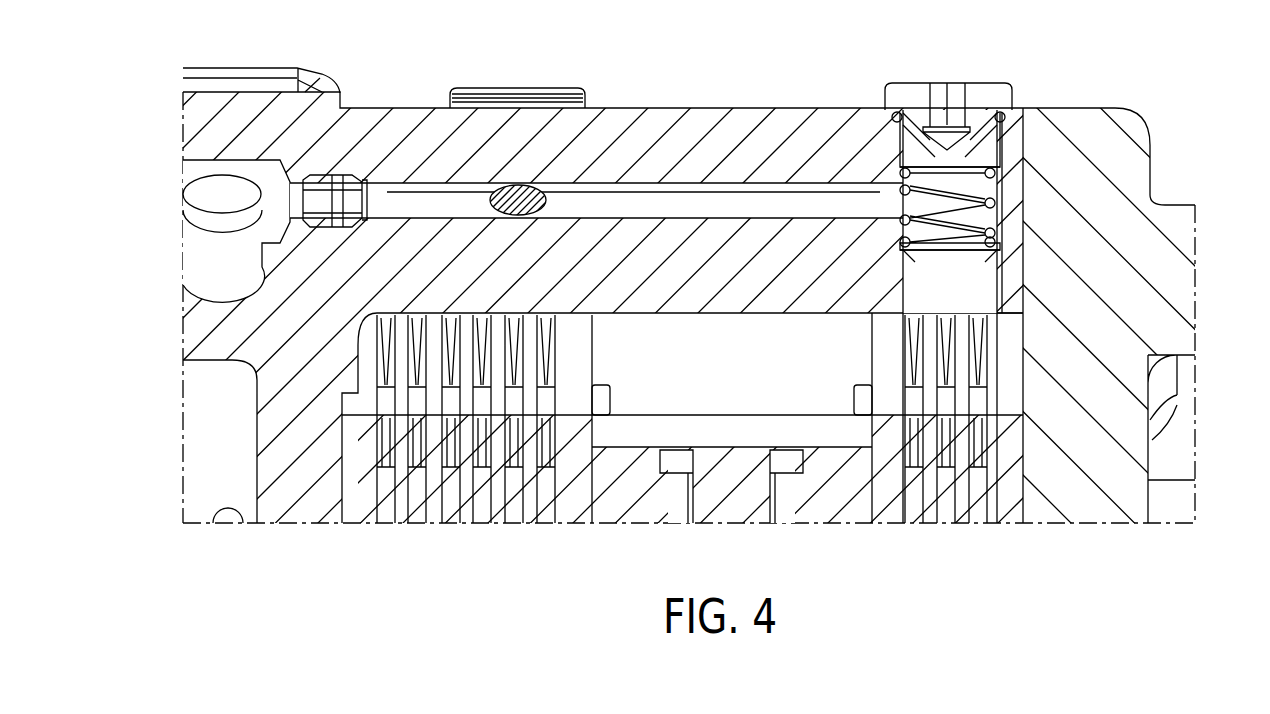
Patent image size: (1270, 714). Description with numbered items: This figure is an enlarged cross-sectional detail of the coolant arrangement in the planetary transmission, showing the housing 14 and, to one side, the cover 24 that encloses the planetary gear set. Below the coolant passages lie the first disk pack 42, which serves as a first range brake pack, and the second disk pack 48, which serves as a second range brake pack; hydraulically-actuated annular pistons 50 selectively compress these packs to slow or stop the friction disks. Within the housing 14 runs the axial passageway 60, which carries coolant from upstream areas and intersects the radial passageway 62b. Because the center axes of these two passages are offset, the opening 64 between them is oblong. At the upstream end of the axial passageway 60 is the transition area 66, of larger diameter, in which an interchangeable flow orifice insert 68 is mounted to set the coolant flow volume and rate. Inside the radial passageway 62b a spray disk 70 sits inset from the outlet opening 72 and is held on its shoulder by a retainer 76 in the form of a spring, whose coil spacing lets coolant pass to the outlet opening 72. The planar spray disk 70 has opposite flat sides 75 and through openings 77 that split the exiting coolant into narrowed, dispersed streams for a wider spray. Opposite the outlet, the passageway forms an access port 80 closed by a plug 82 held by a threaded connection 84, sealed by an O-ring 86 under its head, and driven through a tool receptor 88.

The housing 14 is at (747, 112).
The cover 24 is at (1182, 357).
The first disk pack 42 is at (467, 524).
The second disk pack 48 is at (945, 524).
The annular piston 50 is at (640, 522).
The axial passageway 60 is at (683, 183).
The radial passageway 62b is at (530, 195).
The opening 64 is at (542, 197).
The transition area 66 is at (322, 178).
The flow orifice insert 68 is at (333, 223).
The spray disk 70 is at (952, 316).
The outlet opening 72 is at (992, 312).
The flat side 75 is at (978, 247).
The retainer 76 is at (490, 193).
The through opening 77 is at (907, 253).
The access port 80 is at (890, 116).
The plug 82 is at (530, 88).
The threaded connection 84 is at (1013, 150).
The O-ring 86 is at (1005, 121).
The tool receptor 88 is at (955, 88).